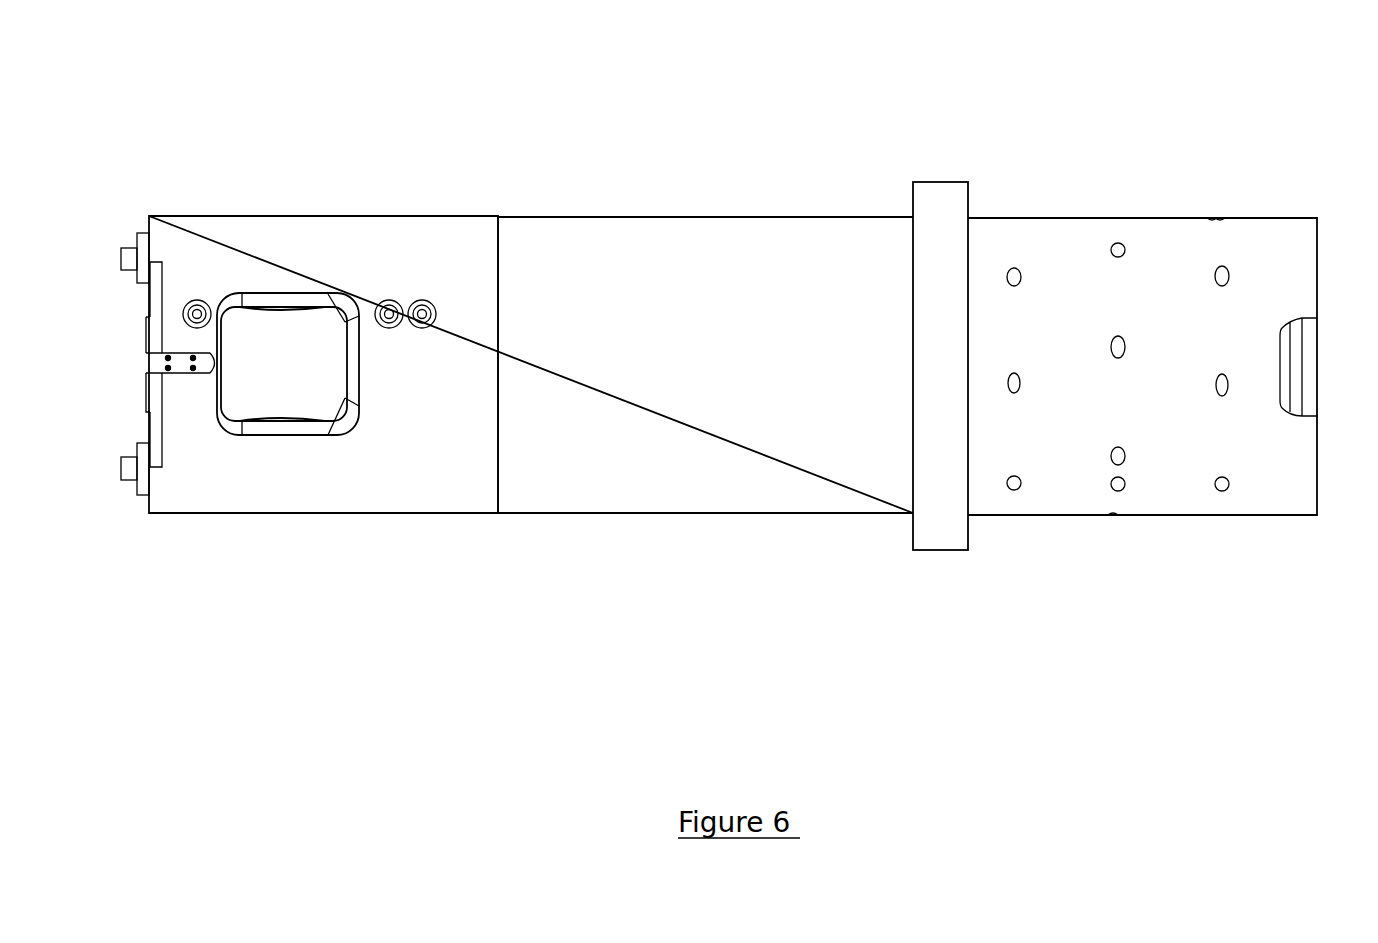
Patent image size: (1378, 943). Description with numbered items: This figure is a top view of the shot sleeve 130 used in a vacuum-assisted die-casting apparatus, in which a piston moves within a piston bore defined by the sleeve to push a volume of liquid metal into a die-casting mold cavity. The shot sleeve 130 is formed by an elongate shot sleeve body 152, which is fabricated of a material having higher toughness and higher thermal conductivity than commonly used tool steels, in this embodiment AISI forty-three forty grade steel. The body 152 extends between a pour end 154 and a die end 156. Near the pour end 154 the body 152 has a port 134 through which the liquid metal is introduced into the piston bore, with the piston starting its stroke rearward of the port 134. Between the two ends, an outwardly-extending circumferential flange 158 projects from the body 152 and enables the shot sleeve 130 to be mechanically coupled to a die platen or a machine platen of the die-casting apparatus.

The shot sleeve 130 is at (1229, 68).
The port 134 is at (297, 340).
The shot sleeve body 152 is at (615, 238).
The pour end 154 is at (110, 230).
The die end 156 is at (1335, 245).
The circumferential flange 158 is at (942, 192).